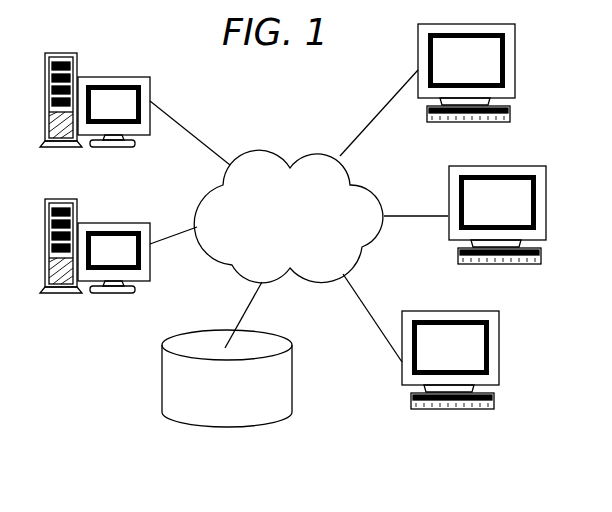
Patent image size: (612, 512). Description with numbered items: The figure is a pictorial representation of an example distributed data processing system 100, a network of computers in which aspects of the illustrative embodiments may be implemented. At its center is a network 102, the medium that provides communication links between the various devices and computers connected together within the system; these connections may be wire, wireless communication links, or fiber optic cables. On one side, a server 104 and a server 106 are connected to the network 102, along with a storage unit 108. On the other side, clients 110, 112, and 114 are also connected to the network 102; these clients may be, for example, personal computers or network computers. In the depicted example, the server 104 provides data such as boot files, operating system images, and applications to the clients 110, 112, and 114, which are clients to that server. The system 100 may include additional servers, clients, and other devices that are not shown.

The distributed data processing system 100 is at (119, 361).
The network 102 is at (262, 152).
The server 104 is at (108, 76).
The server 106 is at (108, 222).
The storage unit 108 is at (293, 366).
The client 110 is at (517, 63).
The client 112 is at (548, 208).
The client 114 is at (500, 355).